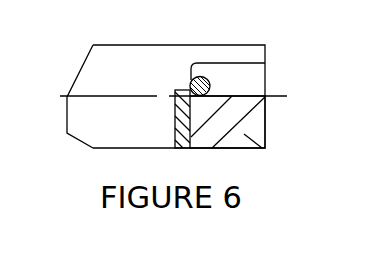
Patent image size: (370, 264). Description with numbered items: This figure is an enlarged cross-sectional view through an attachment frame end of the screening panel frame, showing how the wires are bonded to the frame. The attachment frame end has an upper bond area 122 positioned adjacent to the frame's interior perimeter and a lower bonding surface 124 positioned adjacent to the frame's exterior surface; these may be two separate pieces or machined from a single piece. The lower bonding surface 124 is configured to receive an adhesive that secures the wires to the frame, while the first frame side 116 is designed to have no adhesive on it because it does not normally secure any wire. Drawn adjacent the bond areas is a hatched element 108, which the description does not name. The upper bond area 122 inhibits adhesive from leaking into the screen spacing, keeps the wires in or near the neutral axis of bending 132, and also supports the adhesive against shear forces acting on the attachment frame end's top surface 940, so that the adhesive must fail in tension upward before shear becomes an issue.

The first frame side 116 is at (267, 46).
The upper bond area 122 is at (178, 80).
The top surface 940 is at (226, 63).
The ball 108 is at (213, 84).
The lower bonding surface 124 is at (234, 98).
The neutral axis of bending 132 is at (143, 98).